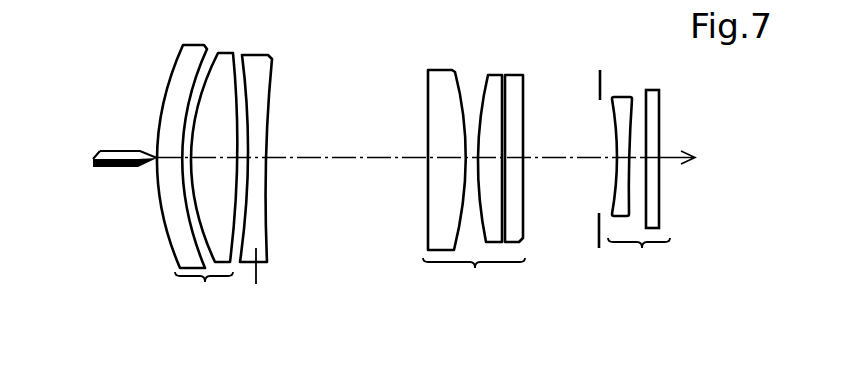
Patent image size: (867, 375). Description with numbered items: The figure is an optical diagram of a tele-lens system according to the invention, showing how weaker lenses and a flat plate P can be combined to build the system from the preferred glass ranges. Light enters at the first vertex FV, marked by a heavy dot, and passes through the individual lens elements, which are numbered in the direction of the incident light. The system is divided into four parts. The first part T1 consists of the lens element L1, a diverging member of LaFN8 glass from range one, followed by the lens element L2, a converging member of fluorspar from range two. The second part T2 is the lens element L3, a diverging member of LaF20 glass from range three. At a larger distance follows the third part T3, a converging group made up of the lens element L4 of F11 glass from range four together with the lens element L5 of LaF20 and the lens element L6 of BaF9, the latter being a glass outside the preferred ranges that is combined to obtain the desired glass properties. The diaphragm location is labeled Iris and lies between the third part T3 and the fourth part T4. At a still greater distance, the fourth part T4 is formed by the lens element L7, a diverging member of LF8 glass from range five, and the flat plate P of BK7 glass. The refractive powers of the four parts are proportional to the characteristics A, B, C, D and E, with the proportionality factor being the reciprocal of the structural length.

The first lens element L1 is at (187, 73).
The second lens element L2 is at (220, 65).
The third lens element L3 is at (257, 70).
The fourth lens element L4 is at (443, 85).
The fifth lens element L5 is at (492, 85).
The sixth lens element L6 is at (512, 92).
The seventh lens element L7 is at (622, 107).
The first part T1 is at (204, 295).
The second part T2 is at (256, 283).
The third part T3 is at (474, 283).
The fourth part T4 is at (639, 266).
The first vertex FV is at (154, 157).
The diaphragm location Iris is at (598, 233).
The flat plate P is at (658, 108).